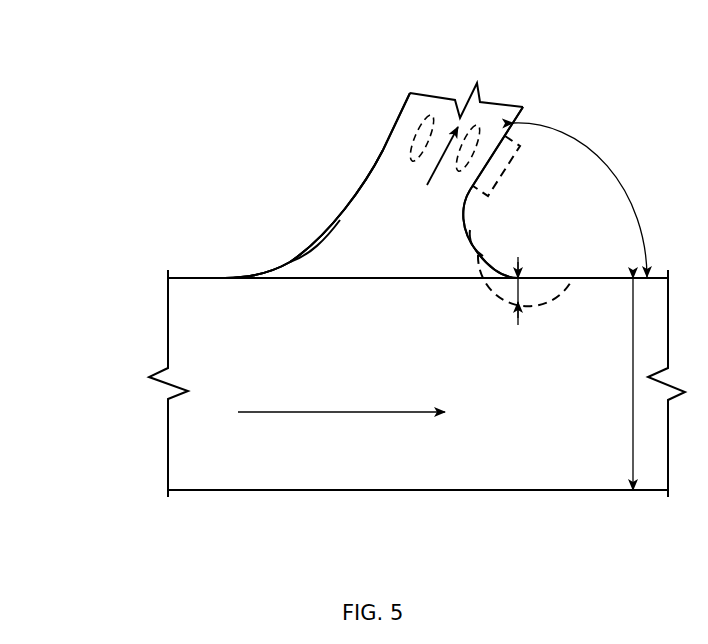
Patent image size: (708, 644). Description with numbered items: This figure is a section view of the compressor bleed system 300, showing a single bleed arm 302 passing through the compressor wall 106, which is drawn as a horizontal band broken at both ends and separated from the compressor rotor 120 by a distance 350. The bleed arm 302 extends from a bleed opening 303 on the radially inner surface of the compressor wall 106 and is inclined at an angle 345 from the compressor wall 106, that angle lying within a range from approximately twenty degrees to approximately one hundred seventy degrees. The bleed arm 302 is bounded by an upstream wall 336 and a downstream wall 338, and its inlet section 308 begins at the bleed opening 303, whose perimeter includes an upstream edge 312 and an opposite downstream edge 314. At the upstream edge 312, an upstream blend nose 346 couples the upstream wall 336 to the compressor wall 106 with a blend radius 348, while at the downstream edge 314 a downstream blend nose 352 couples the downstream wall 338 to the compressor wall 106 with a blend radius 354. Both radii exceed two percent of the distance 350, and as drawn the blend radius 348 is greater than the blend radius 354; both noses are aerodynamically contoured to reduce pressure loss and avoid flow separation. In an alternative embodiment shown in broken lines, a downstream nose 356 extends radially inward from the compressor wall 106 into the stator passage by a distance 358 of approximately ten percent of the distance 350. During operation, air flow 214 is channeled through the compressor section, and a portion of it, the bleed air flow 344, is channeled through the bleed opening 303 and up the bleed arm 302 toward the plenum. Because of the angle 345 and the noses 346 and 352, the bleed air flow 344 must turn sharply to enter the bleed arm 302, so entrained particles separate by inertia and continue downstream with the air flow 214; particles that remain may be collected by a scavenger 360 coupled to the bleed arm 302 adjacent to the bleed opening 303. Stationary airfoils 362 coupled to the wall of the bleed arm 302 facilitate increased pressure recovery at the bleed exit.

The compressor bleed system 300 is at (132, 65).
The compressor wall 106 is at (183, 277).
The compressor rotor 120 is at (512, 492).
The bleed opening 303 is at (400, 283).
The air flow 214 is at (347, 408).
The distance 350 is at (632, 385).
The bleed arm 302 is at (500, 98).
The upstream wall 336 is at (395, 127).
The inlet section 308 is at (400, 170).
The blend radius 348 is at (283, 260).
The upstream blend nose 346 is at (317, 248).
The upstream edge 312 is at (242, 280).
The downstream wall 338 is at (487, 188).
The downstream blend nose 352 is at (466, 234).
The downstream edge 314 is at (481, 265).
The blend radius 354 is at (484, 255).
The downstream nose 356 is at (558, 297).
The distance 358 is at (527, 305).
The angle 345 is at (613, 173).
The bleed air flow 344 is at (440, 150).
The stationary airfoils 362 is at (423, 97).
The scavenger 360 is at (515, 155).